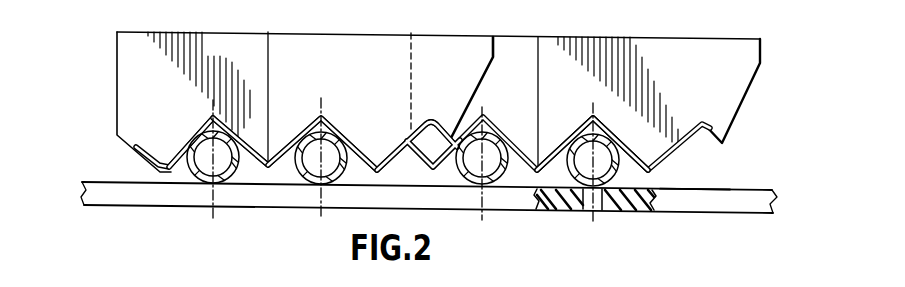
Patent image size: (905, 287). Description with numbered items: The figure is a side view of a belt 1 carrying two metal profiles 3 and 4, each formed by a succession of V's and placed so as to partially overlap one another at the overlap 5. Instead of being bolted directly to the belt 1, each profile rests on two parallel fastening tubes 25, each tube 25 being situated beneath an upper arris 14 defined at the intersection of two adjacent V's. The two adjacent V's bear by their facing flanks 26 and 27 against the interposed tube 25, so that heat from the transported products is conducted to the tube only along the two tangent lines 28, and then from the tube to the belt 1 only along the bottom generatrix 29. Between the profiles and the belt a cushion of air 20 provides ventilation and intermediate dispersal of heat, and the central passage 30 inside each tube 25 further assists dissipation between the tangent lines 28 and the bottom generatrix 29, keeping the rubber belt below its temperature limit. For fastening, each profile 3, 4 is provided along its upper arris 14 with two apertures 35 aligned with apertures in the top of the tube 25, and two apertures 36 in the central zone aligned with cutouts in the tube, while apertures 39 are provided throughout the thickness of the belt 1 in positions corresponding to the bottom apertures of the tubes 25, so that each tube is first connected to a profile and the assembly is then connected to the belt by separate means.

The belt 1 is at (745, 190).
The profile 3 is at (117, 86).
The profile 4 is at (740, 35).
The overlap 5 is at (418, 108).
The upper arris 14 is at (215, 117).
The cushion of air 20 is at (699, 185).
The fastening tube 25 is at (190, 172).
The flank 26 is at (197, 134).
The flank 27 is at (245, 150).
The tangent line 28 is at (345, 138).
The bottom generatrix 29 is at (320, 187).
The central passage 30 is at (487, 185).
The aperture 35 is at (603, 123).
The aperture 36 is at (592, 144).
The aperture 39 is at (583, 206).